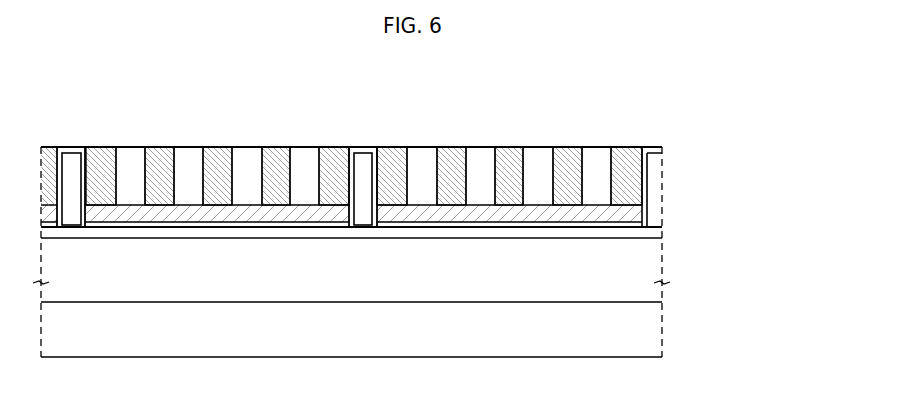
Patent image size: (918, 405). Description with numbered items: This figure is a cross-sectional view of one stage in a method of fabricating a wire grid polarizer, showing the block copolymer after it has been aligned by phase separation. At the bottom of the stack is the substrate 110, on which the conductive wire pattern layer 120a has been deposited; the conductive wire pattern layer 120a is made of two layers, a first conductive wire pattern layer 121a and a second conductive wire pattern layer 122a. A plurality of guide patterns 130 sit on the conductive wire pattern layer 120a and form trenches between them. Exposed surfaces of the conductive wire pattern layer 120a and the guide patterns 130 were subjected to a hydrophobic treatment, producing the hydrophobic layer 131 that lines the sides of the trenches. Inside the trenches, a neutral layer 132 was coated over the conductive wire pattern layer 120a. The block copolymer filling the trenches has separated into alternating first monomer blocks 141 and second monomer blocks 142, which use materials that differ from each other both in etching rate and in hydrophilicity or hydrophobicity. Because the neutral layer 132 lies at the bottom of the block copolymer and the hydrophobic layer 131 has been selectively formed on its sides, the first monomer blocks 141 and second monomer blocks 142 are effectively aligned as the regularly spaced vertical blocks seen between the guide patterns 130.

The substrate 110 is at (658, 328).
The conductive wire pattern layer 120a is at (419, 255).
The first conductive wire pattern layer 121a is at (658, 271).
The second conductive wire pattern layer 122a is at (658, 233).
The guide patterns 130 is at (380, 150).
The hydrophobic layer 131 is at (660, 149).
The neutral layer 132 is at (636, 212).
The first monomer blocks 141 is at (597, 150).
The second monomer blocks 142 is at (510, 148).